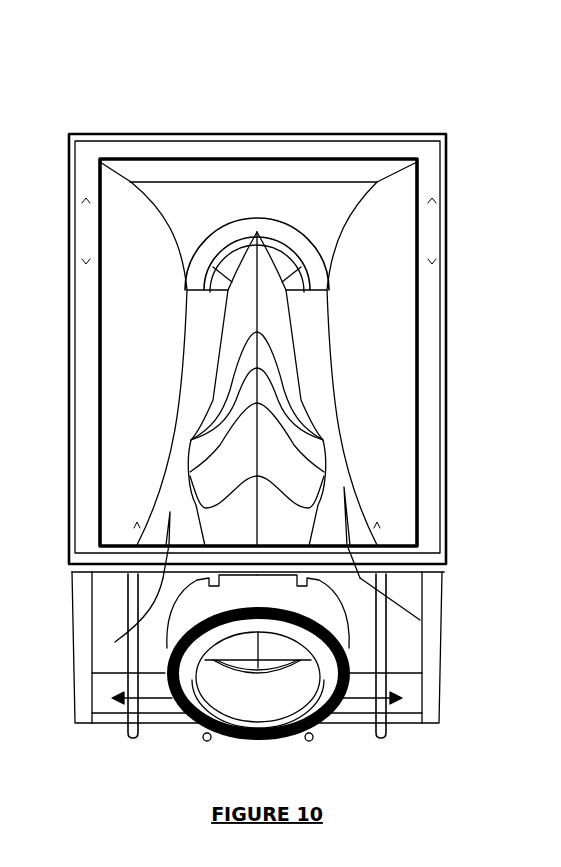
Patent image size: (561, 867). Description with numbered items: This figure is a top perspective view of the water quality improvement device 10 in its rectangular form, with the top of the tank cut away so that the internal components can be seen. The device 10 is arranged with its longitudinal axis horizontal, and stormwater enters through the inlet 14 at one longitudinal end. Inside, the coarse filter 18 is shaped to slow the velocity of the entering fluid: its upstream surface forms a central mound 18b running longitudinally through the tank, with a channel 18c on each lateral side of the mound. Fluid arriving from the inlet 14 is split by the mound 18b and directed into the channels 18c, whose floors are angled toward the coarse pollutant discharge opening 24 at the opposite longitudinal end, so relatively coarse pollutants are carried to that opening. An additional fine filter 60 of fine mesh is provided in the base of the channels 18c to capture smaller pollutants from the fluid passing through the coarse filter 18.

The water quality improvement device 10 is at (276, 421).
The inlet 14 is at (197, 727).
The coarse filter 18 is at (145, 357).
The central mound 18b is at (265, 318).
The channel 18c is at (115, 642).
The coarse pollutant discharge opening 24 is at (213, 232).
The additional fine filter 60 is at (165, 468).